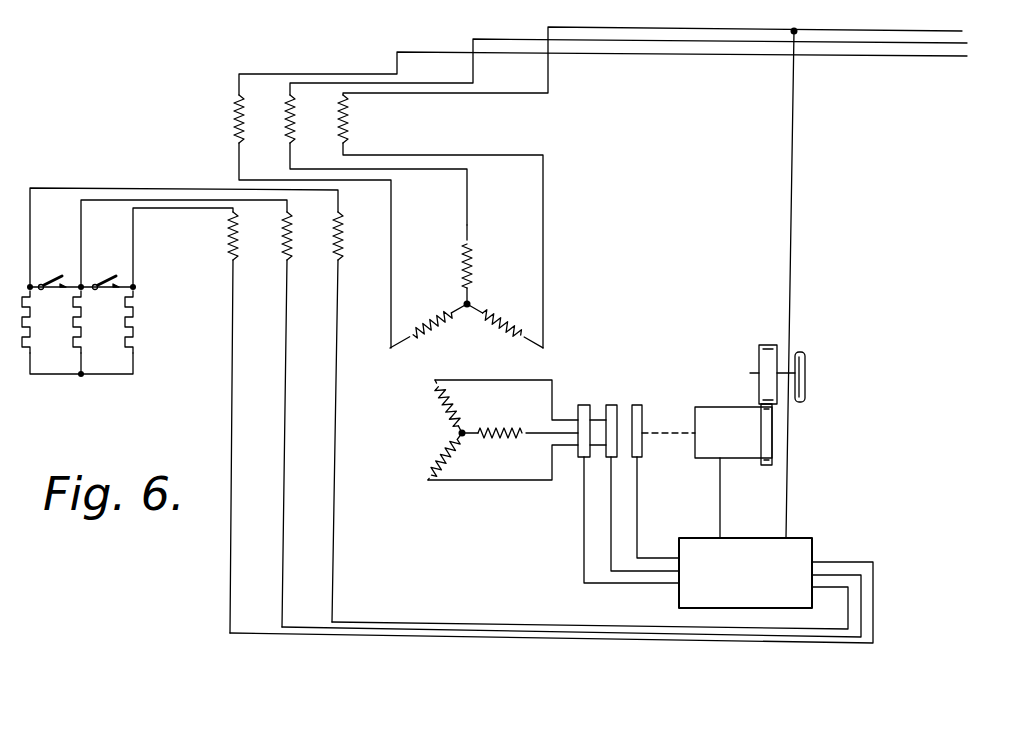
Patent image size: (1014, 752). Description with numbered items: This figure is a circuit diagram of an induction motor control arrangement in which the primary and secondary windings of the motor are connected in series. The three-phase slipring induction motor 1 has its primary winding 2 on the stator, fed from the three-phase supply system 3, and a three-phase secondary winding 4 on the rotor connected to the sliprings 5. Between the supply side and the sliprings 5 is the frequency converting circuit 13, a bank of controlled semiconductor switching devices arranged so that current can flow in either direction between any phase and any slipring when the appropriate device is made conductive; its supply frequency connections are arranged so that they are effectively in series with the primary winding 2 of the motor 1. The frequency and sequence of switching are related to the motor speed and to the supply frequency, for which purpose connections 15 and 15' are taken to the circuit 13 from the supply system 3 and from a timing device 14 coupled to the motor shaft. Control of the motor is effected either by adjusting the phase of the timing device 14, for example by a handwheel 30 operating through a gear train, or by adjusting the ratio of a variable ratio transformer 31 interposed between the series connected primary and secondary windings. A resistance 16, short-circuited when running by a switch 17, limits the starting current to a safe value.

The induction motor 1 is at (466, 331).
The primary winding 2 is at (484, 264).
The supply system 3 is at (614, 61).
The secondary winding 4 is at (492, 430).
The sliprings 5 is at (636, 477).
The frequency converting circuit 13 is at (551, 590).
The timing device 14 is at (736, 405).
The connections 15 is at (803, 284).
The connections 15' is at (740, 498).
The resistance 16 is at (96, 330).
The switch 17 is at (79, 273).
The handwheel 30 is at (807, 377).
The variable ratio transformer 31 is at (222, 172).